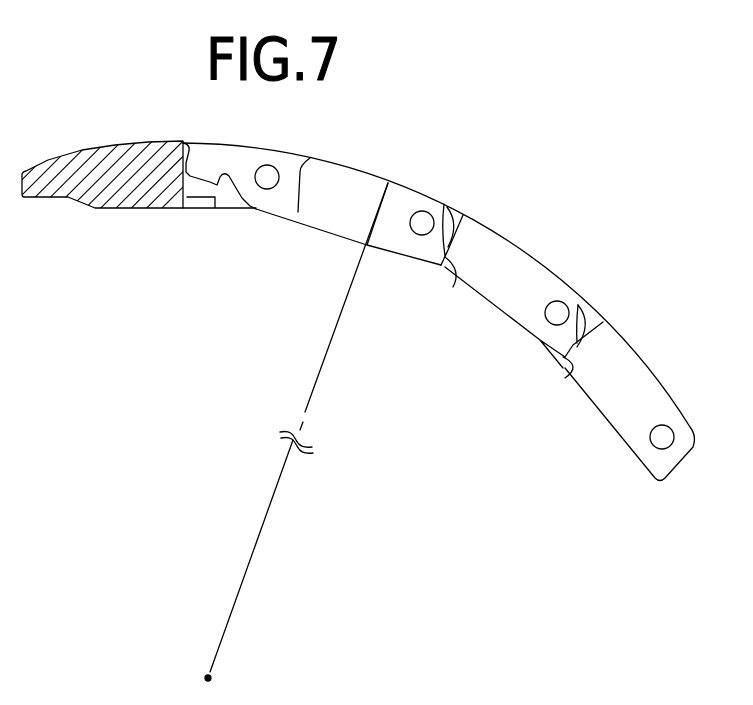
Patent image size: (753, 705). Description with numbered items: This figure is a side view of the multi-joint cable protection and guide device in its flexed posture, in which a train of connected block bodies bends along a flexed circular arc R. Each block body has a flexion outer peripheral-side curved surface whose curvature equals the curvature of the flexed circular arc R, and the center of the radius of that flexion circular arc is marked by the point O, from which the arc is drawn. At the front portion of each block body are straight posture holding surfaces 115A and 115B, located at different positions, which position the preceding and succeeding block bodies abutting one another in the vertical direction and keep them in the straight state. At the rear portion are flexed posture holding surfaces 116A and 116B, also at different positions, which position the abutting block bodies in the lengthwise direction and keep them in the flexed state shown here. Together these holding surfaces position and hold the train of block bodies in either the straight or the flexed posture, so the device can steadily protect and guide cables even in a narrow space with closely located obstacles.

The straight posture holding surface 115A is at (66, 190).
The straight posture holding surface 115B is at (203, 194).
The flexed posture holding surface 116A is at (298, 210).
The flexed posture holding surface 116B is at (451, 228).
The flexed circular arc R is at (299, 396).
The center of the radius of the flexion circular arc O is at (200, 672).